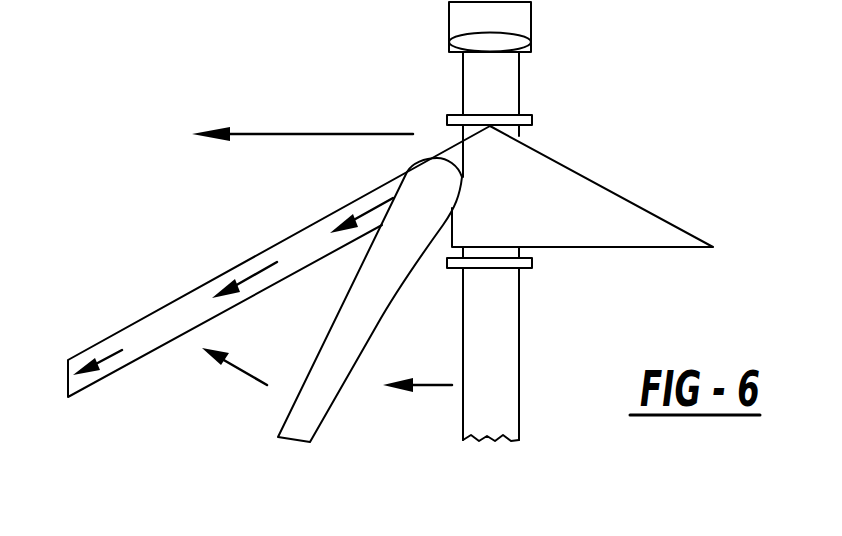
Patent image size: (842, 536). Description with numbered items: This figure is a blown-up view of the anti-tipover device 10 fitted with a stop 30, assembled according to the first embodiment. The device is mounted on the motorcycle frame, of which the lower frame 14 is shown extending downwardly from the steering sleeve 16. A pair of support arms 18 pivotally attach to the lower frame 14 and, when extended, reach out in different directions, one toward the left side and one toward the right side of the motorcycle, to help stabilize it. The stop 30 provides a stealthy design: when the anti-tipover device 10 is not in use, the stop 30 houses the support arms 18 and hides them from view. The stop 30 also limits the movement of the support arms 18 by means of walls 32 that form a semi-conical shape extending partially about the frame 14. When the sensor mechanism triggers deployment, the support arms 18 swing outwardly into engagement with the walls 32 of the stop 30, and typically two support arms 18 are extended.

The anti-tipover device 10 is at (423, 222).
The lower frame 14 is at (518, 365).
The steering sleeve 16 is at (531, 18).
The support arms 18 is at (279, 284).
The stop 30 is at (558, 160).
The walls 32 is at (316, 220).